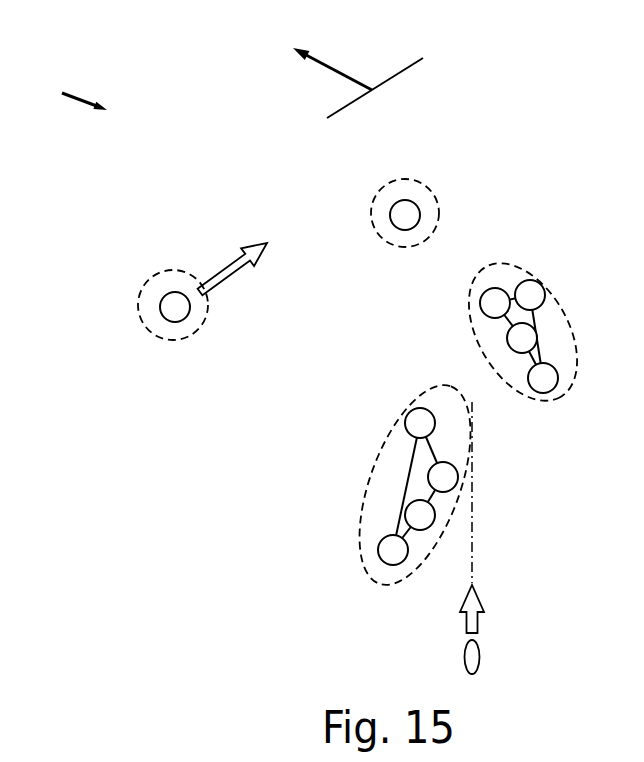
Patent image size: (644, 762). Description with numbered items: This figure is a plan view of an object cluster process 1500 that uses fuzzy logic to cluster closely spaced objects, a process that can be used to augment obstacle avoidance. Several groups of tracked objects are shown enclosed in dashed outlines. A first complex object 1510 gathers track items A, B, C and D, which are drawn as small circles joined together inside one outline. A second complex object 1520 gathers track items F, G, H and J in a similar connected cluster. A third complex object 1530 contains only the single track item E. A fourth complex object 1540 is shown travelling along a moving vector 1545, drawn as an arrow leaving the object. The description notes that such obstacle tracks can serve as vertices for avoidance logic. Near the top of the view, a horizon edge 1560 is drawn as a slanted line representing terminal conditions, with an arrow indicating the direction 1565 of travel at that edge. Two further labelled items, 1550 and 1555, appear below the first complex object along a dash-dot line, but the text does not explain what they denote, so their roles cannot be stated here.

The object cluster process 1500 is at (57, 89).
The first complex object 1510 is at (377, 457).
The second complex object 1520 is at (477, 338).
The third complex object 1530 is at (440, 203).
The fourth complex object 1540 is at (140, 280).
The moving vector 1545 is at (238, 250).
The target particle 1550 is at (463, 657).
The direction of motion arrow 1555 is at (458, 598).
The horizon edge 1560 is at (403, 72).
The direction 1565 is at (335, 67).